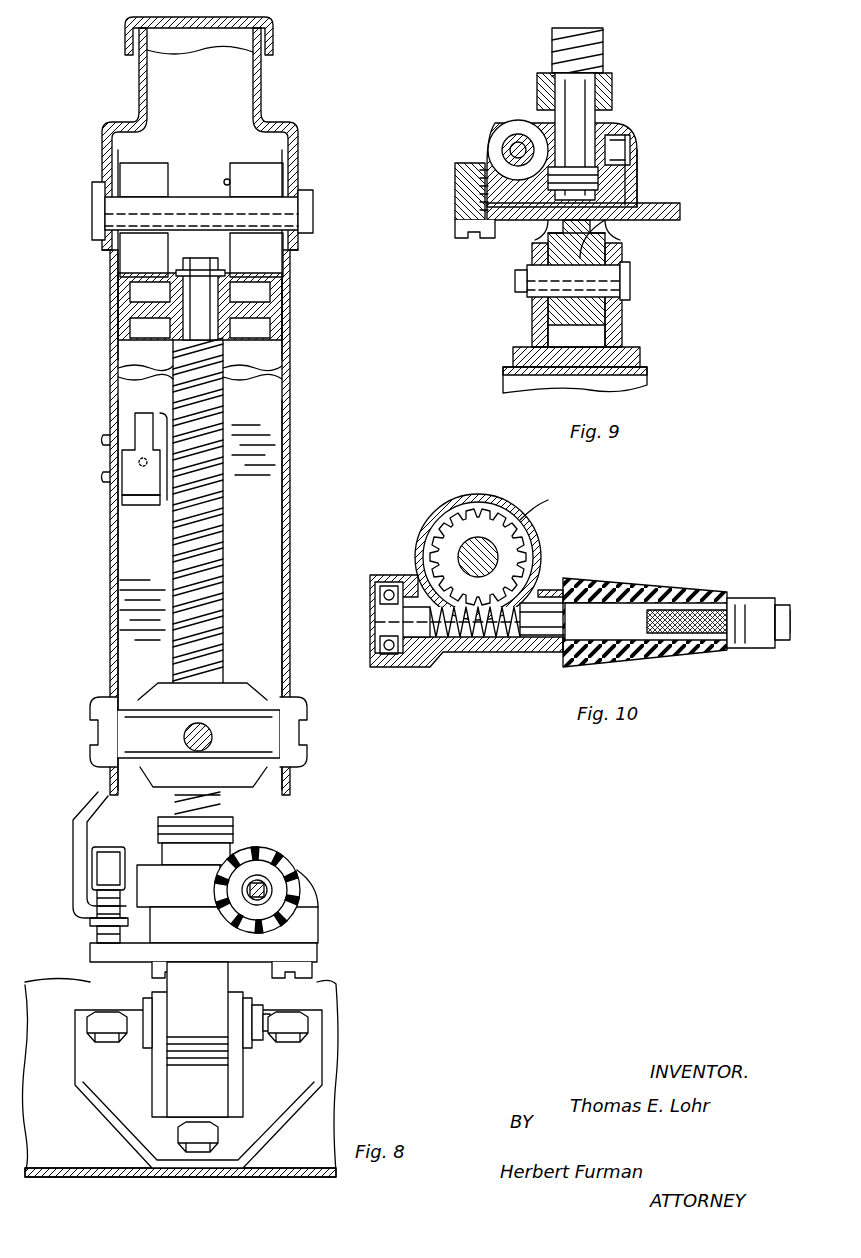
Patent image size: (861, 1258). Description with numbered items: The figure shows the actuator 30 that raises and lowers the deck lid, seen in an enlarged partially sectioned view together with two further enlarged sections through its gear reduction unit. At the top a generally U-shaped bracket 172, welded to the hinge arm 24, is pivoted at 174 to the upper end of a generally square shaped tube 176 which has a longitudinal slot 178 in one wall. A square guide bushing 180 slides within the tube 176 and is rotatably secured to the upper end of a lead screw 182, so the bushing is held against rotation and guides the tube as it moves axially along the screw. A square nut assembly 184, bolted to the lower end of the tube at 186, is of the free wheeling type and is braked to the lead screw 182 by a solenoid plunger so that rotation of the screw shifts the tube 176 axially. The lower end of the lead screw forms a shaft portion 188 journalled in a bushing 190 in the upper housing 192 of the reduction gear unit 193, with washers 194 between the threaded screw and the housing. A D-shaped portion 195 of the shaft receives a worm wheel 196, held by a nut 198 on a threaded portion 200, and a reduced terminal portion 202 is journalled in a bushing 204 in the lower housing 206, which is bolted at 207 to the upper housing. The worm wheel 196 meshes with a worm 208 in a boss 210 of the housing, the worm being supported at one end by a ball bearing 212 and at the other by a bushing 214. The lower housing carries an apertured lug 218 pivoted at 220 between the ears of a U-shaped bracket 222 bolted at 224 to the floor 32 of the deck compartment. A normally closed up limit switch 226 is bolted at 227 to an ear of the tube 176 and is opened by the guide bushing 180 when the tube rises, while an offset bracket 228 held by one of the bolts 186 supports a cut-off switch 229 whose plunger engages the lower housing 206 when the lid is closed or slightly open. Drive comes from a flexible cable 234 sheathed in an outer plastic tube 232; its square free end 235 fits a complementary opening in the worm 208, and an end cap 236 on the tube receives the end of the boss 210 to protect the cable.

In FIG. 8, the hinge arm 24 is at (273, 33).
In FIG. 8, the actuator 30 is at (290, 532).
In FIG. 8, the floor 32 is at (330, 1040).
In FIG. 9, the floor 32 is at (648, 372).
In FIG. 8, the U-shaped bracket 172 is at (263, 90).
In FIG. 8, the pivot 174 is at (313, 210).
In FIG. 8, the square shaped tube 176 is at (290, 362).
In FIG. 8, the longitudinal slot 178 is at (227, 183).
In FIG. 8, the guide bushing 180 is at (282, 300).
In FIG. 8, the lead screw 182 is at (210, 522).
In FIG. 9, the lead screw 182 is at (603, 45).
In FIG. 8, the nut assembly 184 is at (243, 722).
In FIG. 8, the bolts 186 is at (150, 745).
In FIG. 9, the shaft portion 188 is at (596, 105).
In FIG. 9, the bushing 190 is at (622, 118).
In FIG. 8, the upper housing 192 is at (300, 905).
In FIG. 9, the upper housing 192 is at (637, 142).
In FIG. 10, the upper housing 192 is at (551, 503).
In FIG. 8, the reduction gear unit 193 is at (318, 915).
In FIG. 9, the reduction gear unit 193 is at (640, 158).
In FIG. 10, the reduction gear unit 193 is at (478, 494).
In FIG. 8, the washers 194 is at (233, 826).
In FIG. 9, the washers 194 is at (612, 80).
In FIG. 9, the D-shaped portion 195 is at (572, 135).
In FIG. 10, the D-shaped portion 195 is at (462, 547).
In FIG. 9, the worm wheel 196 is at (625, 170).
In FIG. 10, the worm wheel 196 is at (530, 600).
In FIG. 9, the nut 198 is at (603, 180).
In FIG. 9, the threaded portion 200 is at (566, 215).
In FIG. 9, the terminal portion 202 is at (607, 222).
In FIG. 9, the bushing 204 is at (560, 235).
In FIG. 8, the lower housing 206 is at (317, 952).
In FIG. 9, the lower housing 206 is at (680, 212).
In FIG. 8, the bolts 207 is at (160, 974).
In FIG. 9, the bolts 207 is at (462, 233).
In FIG. 8, the worm 208 is at (260, 886).
In FIG. 9, the worm 208 is at (512, 150).
In FIG. 10, the worm 208 is at (540, 615).
In FIG. 8, the boss 210 is at (293, 883).
In FIG. 9, the boss 210 is at (497, 128).
In FIG. 10, the boss 210 is at (470, 653).
In FIG. 10, the ball bearing 212 is at (386, 583).
In FIG. 10, the bushing 214 is at (555, 640).
In FIG. 8, the apertured lug 218 is at (201, 1028).
In FIG. 9, the apertured lug 218 is at (595, 318).
In FIG. 8, the pivot 220 is at (265, 1022).
In FIG. 9, the pivot 220 is at (630, 280).
In FIG. 8, the U-shaped bracket 222 is at (305, 1075).
In FIG. 9, the U-shaped bracket 222 is at (640, 357).
In FIG. 8, the bolts 224 is at (107, 1020).
In FIG. 8, the up limit switch 226 is at (128, 483).
In FIG. 8, the bolts 227 is at (104, 440).
In FIG. 8, the offset bracket 228 is at (73, 845).
In FIG. 8, the cut-off switch 229 is at (100, 870).
In FIG. 10, the outer plastic tube 232 is at (742, 598).
In FIG. 10, the cable 234 is at (760, 645).
In FIG. 8, the free end of cable 235 is at (267, 893).
In FIG. 10, the free end of cable 235 is at (647, 603).
In FIG. 10, the end cap 236 is at (625, 578).